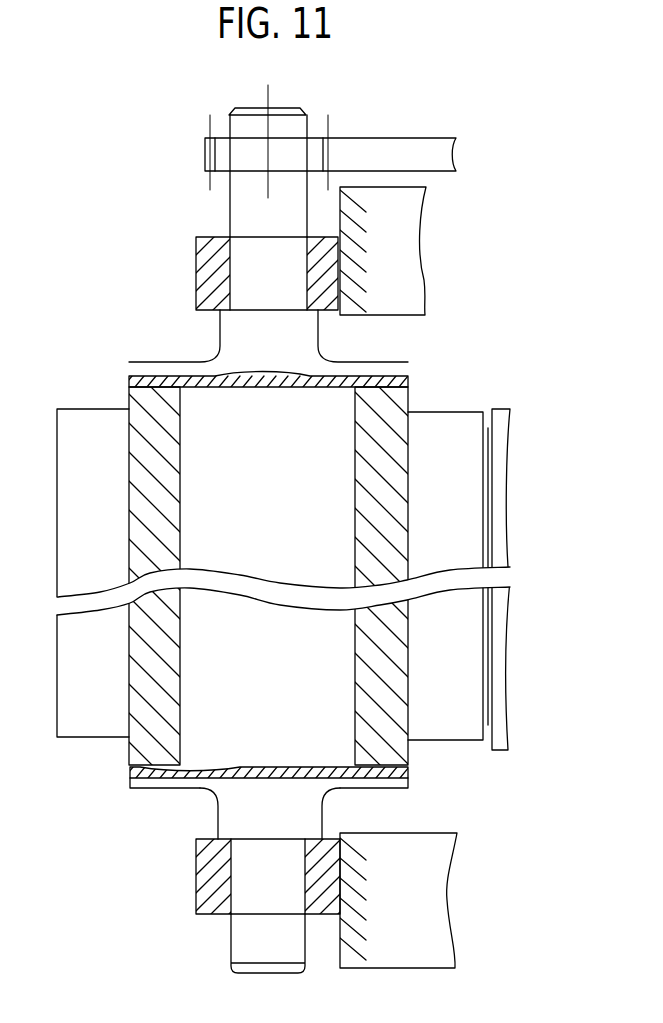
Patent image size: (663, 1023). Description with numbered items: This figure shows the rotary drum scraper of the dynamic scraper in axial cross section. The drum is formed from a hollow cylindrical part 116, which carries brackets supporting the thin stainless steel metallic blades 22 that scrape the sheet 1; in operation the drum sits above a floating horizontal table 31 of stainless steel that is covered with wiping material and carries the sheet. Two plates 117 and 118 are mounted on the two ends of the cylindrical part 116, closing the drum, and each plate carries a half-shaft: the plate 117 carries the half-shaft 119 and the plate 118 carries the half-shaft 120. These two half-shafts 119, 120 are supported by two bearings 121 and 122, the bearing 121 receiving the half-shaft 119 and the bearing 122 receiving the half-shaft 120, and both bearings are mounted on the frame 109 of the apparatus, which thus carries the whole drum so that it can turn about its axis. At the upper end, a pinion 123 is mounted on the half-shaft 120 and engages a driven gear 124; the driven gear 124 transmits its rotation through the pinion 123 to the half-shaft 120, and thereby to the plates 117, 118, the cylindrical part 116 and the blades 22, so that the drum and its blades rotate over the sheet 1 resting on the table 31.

The sheet 1 is at (485, 617).
The blades 22 is at (90, 470).
The floating horizontal table 31 is at (497, 510).
The frame 109 is at (402, 243).
The hollow cylindrical part 116 is at (390, 648).
The plate 117 is at (213, 782).
The plate 118 is at (142, 373).
The half-shaft 119 is at (245, 938).
The half-shaft 120 is at (239, 340).
The bearing 121 is at (212, 883).
The bearing 122 is at (205, 260).
The pinion 123 is at (248, 158).
The driven gear 124 is at (417, 162).